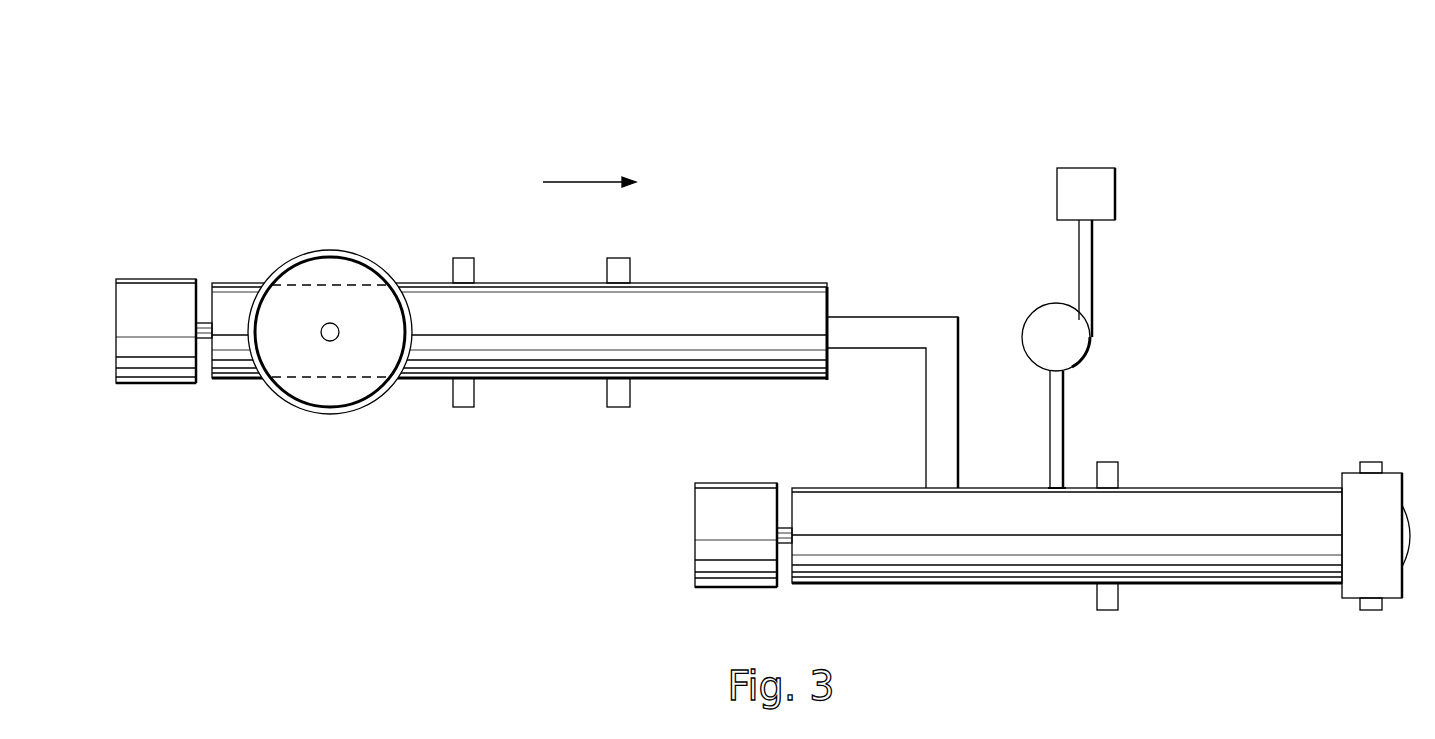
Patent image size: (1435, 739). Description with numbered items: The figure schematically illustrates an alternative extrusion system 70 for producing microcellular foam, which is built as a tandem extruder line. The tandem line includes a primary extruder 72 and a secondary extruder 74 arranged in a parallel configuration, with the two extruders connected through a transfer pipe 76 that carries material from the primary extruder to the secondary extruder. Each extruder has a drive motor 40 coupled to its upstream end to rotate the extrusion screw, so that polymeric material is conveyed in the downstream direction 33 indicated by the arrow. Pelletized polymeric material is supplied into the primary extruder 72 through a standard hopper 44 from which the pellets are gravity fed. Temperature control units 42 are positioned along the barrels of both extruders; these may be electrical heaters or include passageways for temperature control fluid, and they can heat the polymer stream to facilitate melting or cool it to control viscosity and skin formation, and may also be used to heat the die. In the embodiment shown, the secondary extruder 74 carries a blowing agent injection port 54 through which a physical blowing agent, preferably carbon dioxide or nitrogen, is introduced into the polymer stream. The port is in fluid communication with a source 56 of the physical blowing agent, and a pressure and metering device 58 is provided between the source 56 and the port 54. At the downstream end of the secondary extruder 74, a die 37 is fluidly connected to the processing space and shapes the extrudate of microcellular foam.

The extrusion system 70 is at (362, 118).
The downstream direction 33 is at (589, 172).
The drive motor 40 is at (148, 279).
The temperature control units 42 is at (465, 258).
The hopper 44 is at (320, 250).
The primary extruder 72 is at (530, 283).
The secondary extruder 74 is at (1195, 488).
The transfer pipe 76 is at (868, 317).
The source of physical blowing agent 56 is at (1115, 188).
The pressure and metering device 58 is at (1047, 315).
The blowing agent injection port 54 is at (1058, 487).
The die 37 is at (1352, 473).